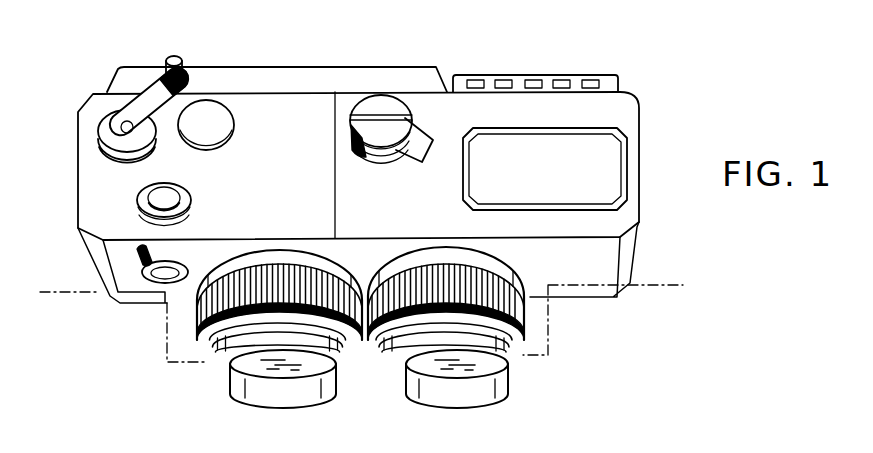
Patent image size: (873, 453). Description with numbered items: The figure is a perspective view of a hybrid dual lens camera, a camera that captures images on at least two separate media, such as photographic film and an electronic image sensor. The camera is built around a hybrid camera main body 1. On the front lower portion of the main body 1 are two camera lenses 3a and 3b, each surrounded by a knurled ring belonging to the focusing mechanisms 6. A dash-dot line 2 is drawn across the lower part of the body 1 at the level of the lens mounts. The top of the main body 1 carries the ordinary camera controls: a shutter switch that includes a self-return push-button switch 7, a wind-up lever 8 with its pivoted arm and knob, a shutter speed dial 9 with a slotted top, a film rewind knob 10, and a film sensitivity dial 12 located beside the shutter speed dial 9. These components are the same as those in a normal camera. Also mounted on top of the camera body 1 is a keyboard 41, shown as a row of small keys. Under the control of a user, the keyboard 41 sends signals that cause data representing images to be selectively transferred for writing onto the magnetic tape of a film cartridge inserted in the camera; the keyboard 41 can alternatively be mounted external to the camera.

The hybrid camera main body 1 is at (642, 102).
The section line 2 is at (364, 314).
The camera lens 3a is at (280, 374).
The camera lens 3b is at (452, 374).
The focusing mechanism 6 is at (321, 283).
The self-return push-button switch 7 is at (142, 198).
The wind-up lever 8 is at (152, 97).
The shutter speed dial 9 is at (377, 105).
The film rewind knob 10 is at (207, 108).
The film sensitivity dial 12 is at (417, 123).
The keyboard 41 is at (558, 72).